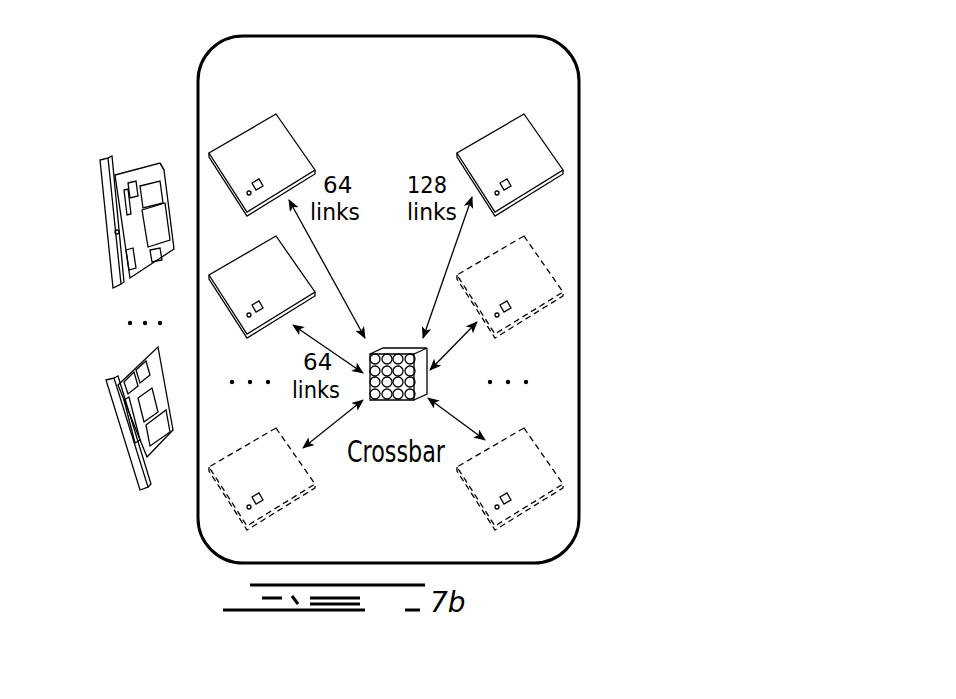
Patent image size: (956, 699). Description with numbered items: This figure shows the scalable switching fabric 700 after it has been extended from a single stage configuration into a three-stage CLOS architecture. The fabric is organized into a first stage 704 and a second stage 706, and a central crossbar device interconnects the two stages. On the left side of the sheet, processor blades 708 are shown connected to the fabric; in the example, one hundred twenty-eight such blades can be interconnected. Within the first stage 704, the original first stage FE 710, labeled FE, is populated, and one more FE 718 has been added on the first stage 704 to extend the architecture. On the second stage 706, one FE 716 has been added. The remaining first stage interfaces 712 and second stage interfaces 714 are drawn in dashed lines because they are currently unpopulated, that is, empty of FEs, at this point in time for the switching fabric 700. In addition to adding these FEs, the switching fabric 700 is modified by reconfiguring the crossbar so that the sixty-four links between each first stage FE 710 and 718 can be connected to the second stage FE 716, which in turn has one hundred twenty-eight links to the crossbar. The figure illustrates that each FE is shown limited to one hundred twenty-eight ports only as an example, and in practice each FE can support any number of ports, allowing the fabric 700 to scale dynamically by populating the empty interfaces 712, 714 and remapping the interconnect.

The scalable switching fabric 700 is at (583, 193).
The first stage 704 is at (297, 84).
The second stage 706 is at (538, 82).
The processor blades 708 is at (120, 215).
The first stage FE 710 is at (309, 155).
The first stage interfaces 712 is at (240, 448).
The second stage interfaces 714 is at (543, 265).
The second stage FE 716 is at (547, 140).
The first stage FE 718 is at (232, 264).